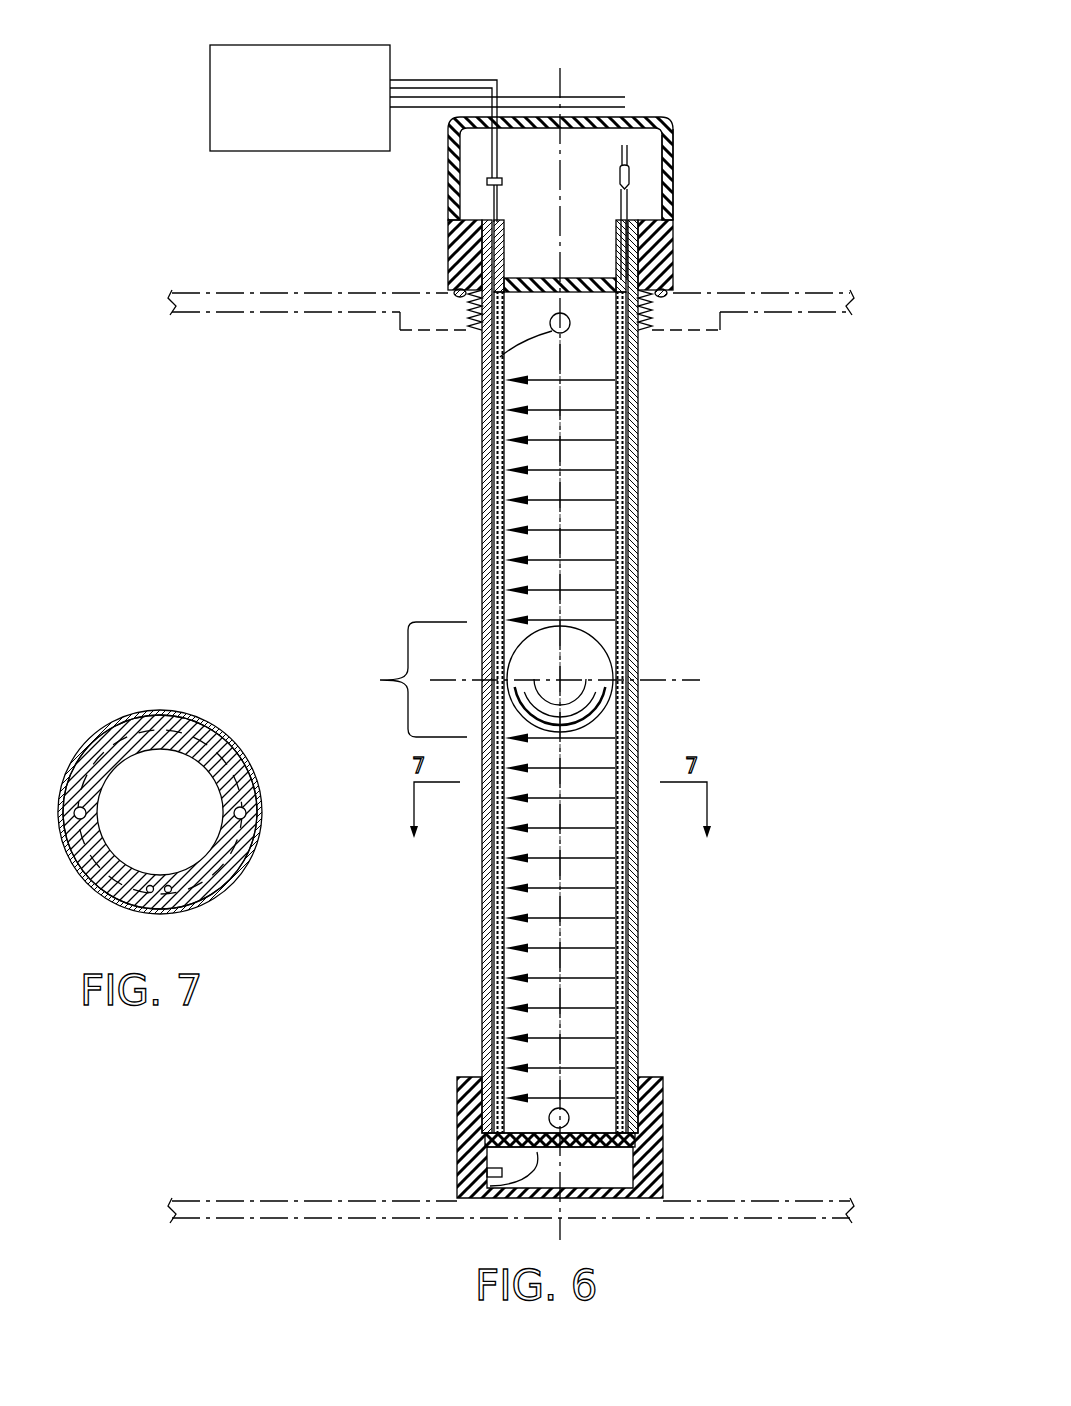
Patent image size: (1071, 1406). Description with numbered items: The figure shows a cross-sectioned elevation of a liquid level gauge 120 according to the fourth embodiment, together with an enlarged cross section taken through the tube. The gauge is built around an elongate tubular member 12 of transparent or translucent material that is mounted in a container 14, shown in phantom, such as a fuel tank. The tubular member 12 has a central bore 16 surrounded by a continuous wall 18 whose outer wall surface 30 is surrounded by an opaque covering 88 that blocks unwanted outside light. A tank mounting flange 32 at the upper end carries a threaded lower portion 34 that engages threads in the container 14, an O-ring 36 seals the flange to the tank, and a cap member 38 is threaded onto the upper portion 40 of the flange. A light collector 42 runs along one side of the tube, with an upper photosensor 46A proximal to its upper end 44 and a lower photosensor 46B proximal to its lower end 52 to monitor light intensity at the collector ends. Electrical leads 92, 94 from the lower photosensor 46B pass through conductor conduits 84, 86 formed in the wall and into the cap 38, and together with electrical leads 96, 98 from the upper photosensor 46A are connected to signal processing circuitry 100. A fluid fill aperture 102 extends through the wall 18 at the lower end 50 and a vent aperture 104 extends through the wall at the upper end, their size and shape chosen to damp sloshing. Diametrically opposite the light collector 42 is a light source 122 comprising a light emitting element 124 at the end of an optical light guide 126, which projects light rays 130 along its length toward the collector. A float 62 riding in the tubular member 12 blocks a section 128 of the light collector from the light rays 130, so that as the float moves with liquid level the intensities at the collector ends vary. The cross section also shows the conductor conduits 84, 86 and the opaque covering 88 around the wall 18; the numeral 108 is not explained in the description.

In FIG. 6, the tubular member 12 is at (644, 632).
In FIG. 7, the tubular member 12 is at (155, 712).
In FIG. 6, the container 14 is at (305, 296).
In FIG. 6, the central bore 16 is at (594, 526).
In FIG. 6, the wall 18 is at (636, 540).
In FIG. 7, the wall 18 is at (224, 750).
In FIG. 6, the outer wall surface 30 is at (482, 442).
In FIG. 6, the tank mounting flange 32 is at (678, 270).
In FIG. 6, the threaded lower portion 34 is at (650, 316).
In FIG. 6, the O-ring 36 is at (455, 296).
In FIG. 6, the cap member 38 is at (672, 122).
In FIG. 6, the upper portion 40 is at (668, 250).
In FIG. 6, the light collector 42 is at (493, 197).
In FIG. 7, the light collector 42 is at (65, 812).
In FIG. 6, the upper end 44 is at (490, 194).
In FIG. 6, the upper photosensor 46A is at (482, 181).
In FIG. 6, the lower photosensor 46B is at (487, 1175).
In FIG. 6, the lower end 50 is at (484, 1020).
In FIG. 6, the lower end 52 is at (460, 1081).
In FIG. 6, the float 62 is at (603, 688).
In FIG. 7, the conductor conduit 84 is at (170, 884).
In FIG. 7, the conductor conduit 86 is at (150, 884).
In FIG. 6, the opaque covering 88 is at (636, 915).
In FIG. 7, the opaque covering 88 is at (100, 728).
In FIG. 6, the electrical lead 92 is at (588, 97).
In FIG. 6, the electrical lead 94 is at (610, 106).
In FIG. 6, the electrical lead 96 is at (448, 80).
In FIG. 6, the electrical lead 98 is at (412, 84).
In FIG. 6, the signal processing circuitry 100 is at (226, 114).
In FIG. 6, the fluid fill aperture 102 is at (572, 1113).
In FIG. 6, the vent aperture 104 is at (486, 385).
In FIG. 6, the cap cavity 108 is at (672, 215).
In FIG. 6, the liquid level gauge 120 is at (832, 144).
In FIG. 6, the light source 122 is at (632, 173).
In FIG. 6, the light emitting element 124 is at (628, 148).
In FIG. 6, the optical light guide 126 is at (622, 200).
In FIG. 7, the optical light guide 126 is at (250, 815).
In FIG. 6, the section 128 is at (397, 679).
In FIG. 6, the light rays 130 is at (585, 467).